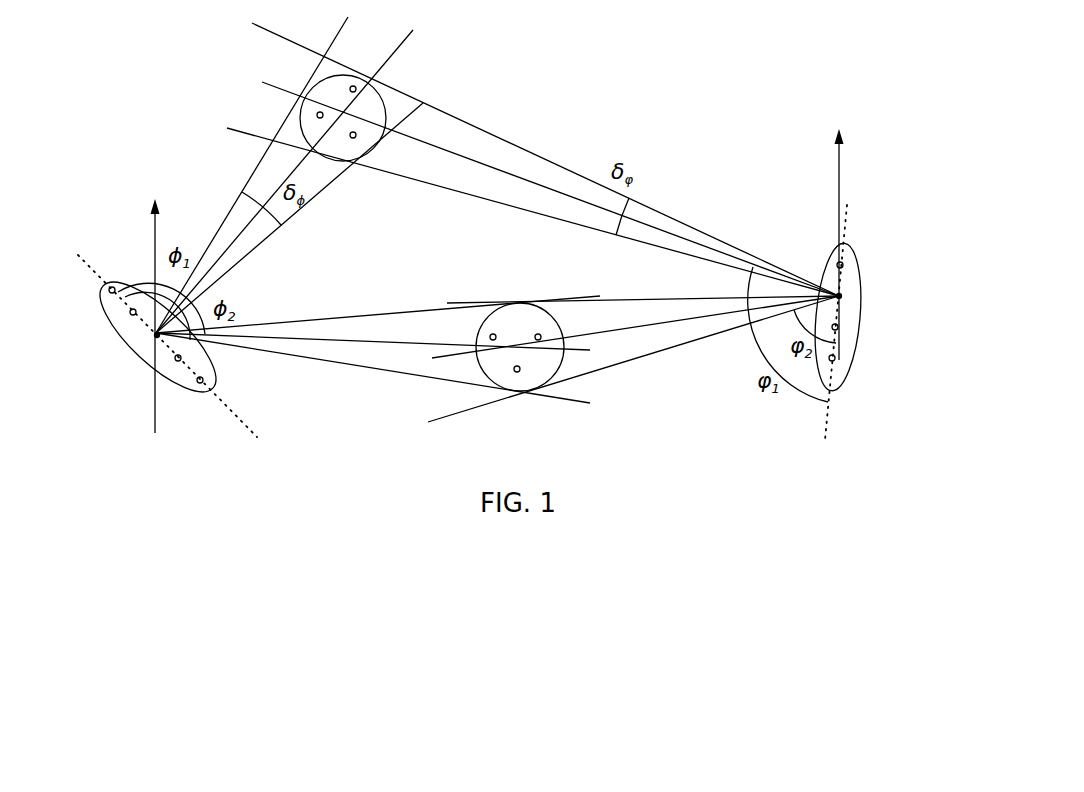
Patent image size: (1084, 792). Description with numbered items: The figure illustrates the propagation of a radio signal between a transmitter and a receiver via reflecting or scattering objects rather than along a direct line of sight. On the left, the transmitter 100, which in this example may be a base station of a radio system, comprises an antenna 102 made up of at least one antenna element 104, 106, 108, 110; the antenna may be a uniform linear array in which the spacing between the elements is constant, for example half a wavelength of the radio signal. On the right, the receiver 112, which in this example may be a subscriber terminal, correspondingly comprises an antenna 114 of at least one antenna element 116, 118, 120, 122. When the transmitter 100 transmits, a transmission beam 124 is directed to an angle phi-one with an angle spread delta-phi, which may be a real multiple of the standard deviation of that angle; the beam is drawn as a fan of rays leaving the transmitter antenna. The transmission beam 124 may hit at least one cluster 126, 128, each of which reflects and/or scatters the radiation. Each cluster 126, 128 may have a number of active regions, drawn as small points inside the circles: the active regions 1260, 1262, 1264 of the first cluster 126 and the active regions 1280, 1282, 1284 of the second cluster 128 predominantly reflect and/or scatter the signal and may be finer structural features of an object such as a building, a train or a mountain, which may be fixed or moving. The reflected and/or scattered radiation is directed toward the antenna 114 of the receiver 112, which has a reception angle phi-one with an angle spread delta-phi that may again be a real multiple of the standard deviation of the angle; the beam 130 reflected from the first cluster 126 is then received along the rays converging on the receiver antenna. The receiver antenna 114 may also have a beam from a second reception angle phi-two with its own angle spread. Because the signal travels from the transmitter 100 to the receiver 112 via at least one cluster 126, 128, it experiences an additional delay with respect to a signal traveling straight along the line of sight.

The transmitter 100 is at (111, 221).
The antenna 102 is at (112, 292).
The antenna element 104 is at (129, 313).
The antenna element 106 is at (152, 337).
The antenna element 108 is at (174, 359).
The antenna element 110 is at (205, 380).
The receiver 112 is at (902, 219).
The antenna 114 is at (835, 243).
The antenna element 116 is at (836, 358).
The antenna element 118 is at (839, 327).
The antenna element 120 is at (843, 296).
The antenna element 122 is at (844, 265).
The transmission beam 124 is at (293, 218).
The cluster 126 is at (329, 74).
The cluster 128 is at (518, 302).
The beam 130 is at (492, 131).
The active region 1260 is at (355, 85).
The active region 1262 is at (354, 139).
The active region 1264 is at (320, 111).
The active region 1280 is at (538, 333).
The active region 1282 is at (491, 334).
The active region 1284 is at (514, 371).